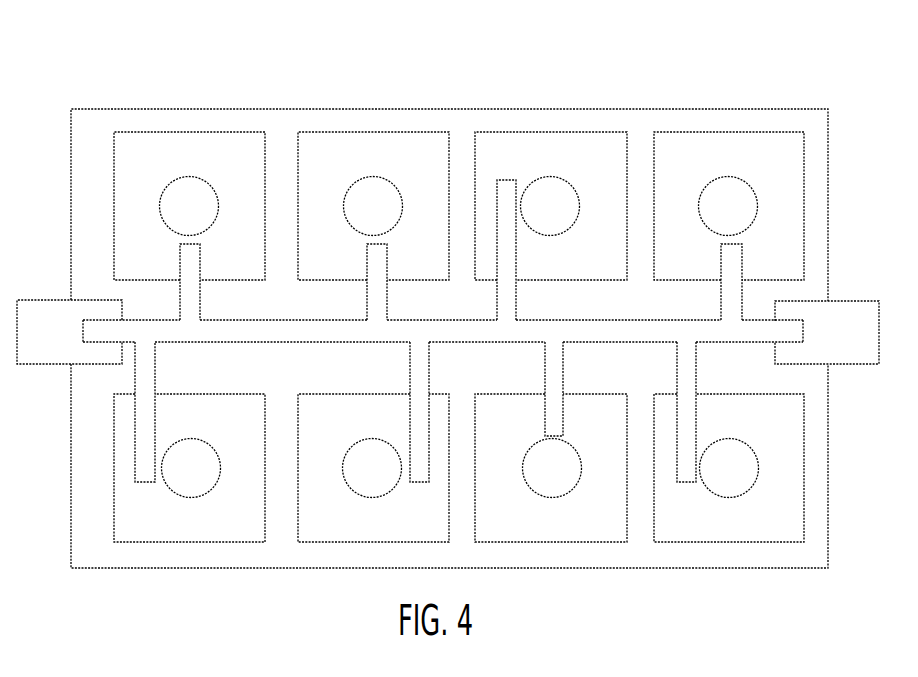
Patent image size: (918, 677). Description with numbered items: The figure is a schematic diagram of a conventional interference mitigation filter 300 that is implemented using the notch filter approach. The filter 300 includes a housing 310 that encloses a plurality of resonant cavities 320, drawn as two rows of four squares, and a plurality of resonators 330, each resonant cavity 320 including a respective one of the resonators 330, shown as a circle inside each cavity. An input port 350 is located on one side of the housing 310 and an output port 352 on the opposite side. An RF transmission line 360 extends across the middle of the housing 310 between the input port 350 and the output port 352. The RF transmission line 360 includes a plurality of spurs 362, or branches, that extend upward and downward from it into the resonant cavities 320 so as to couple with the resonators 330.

The interference mitigation filter 300 is at (163, 89).
The housing 310 is at (737, 118).
The resonant cavities 320 is at (323, 138).
The resonators 330 is at (553, 187).
The input port 350 is at (37, 312).
The output port 352 is at (855, 315).
The RF transmission line 360 is at (609, 338).
The spurs 362 is at (369, 298).